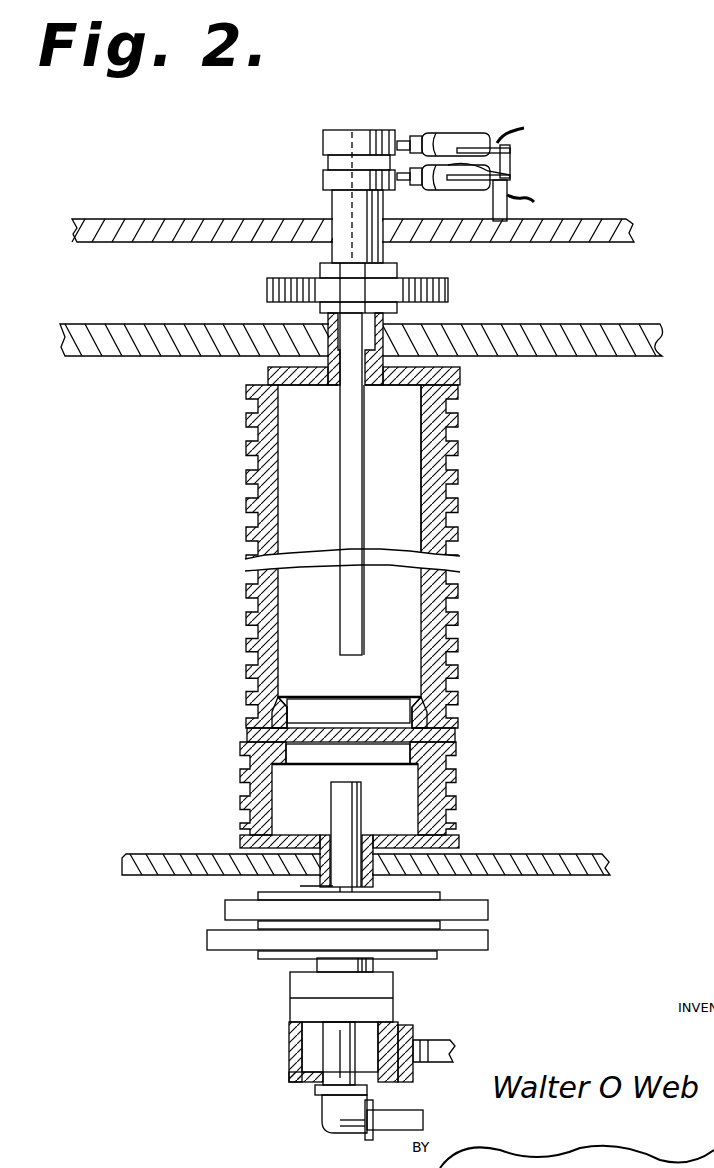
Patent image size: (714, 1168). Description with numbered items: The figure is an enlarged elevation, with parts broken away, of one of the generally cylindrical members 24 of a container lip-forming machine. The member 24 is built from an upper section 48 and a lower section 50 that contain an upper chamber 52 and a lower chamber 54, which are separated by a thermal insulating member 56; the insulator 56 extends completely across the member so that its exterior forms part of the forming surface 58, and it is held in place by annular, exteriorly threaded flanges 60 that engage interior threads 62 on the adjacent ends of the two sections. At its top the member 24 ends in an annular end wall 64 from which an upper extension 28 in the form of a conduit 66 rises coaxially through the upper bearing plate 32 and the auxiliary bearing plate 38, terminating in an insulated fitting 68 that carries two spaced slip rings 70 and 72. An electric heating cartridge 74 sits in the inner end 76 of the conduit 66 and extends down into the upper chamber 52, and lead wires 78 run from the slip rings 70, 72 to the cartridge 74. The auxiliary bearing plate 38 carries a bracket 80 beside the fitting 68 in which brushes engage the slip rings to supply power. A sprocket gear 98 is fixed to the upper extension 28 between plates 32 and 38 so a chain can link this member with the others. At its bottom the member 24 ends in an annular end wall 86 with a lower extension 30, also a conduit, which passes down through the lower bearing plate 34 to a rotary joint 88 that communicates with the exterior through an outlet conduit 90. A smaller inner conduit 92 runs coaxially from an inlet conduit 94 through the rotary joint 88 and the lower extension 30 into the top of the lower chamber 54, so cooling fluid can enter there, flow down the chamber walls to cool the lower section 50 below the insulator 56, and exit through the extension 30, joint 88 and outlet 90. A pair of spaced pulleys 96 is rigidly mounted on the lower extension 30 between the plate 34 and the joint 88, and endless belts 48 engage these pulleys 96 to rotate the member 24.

The cylindrical member 24 is at (474, 491).
The upper axial extension 28 is at (385, 368).
The lower axial extension 30 is at (315, 884).
The upper bearing plate 32 is at (660, 348).
The lower bearing plate 34 is at (611, 870).
The auxiliary bearing plate 38 is at (635, 236).
The upper section 48 is at (450, 453).
The lower section 50 is at (456, 800).
The upper chamber 52 is at (412, 512).
The lower chamber 54 is at (406, 818).
The thermal insulating member 56 is at (432, 729).
The forming surface 58 is at (248, 680).
The annular exteriorly threaded flange 60 is at (414, 706).
The interior threads 62 is at (272, 698).
The annular end wall 64 is at (408, 386).
The conduit 66 is at (370, 333).
The insulated fitting 68 is at (332, 207).
The slip ring 70 is at (330, 145).
The slip ring 72 is at (323, 181).
The electric heating cartridge 74 is at (348, 473).
The inner end 76 is at (340, 386).
The lead wires 78 is at (353, 247).
The bracket 80 is at (505, 186).
The annular end wall 86 is at (326, 836).
The rotary joint 88 is at (393, 1008).
The outlet conduit 90 is at (455, 1050).
The inner conduit 92 is at (358, 796).
The inlet conduit 94 is at (412, 1126).
The pulleys 96 is at (435, 958).
The sprocket gear 98 is at (449, 290).